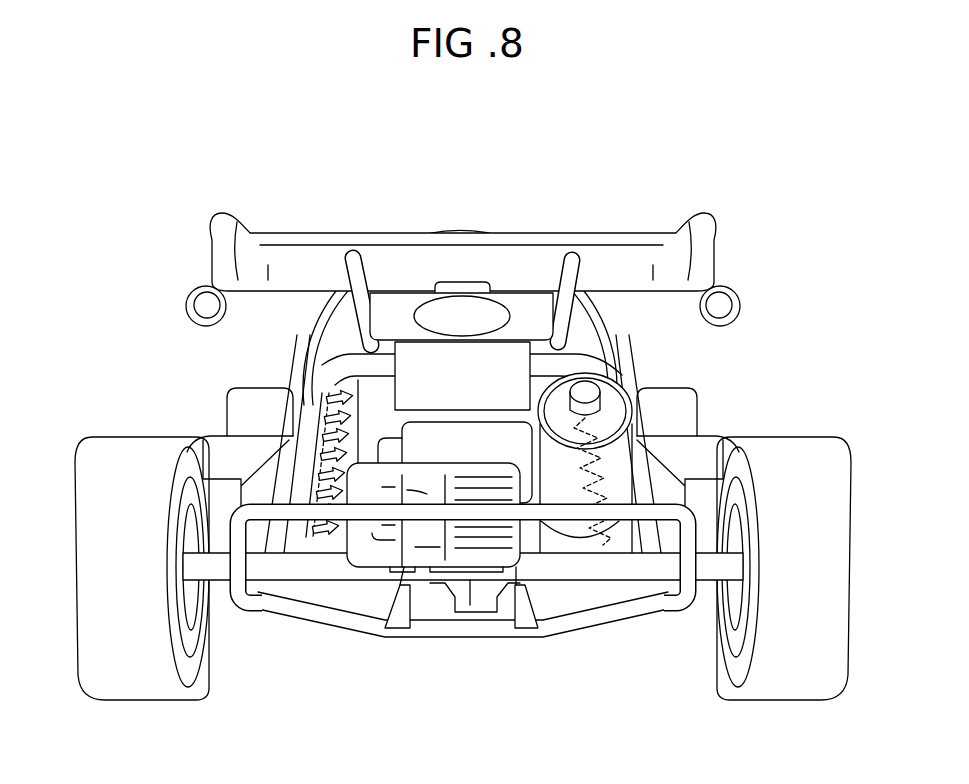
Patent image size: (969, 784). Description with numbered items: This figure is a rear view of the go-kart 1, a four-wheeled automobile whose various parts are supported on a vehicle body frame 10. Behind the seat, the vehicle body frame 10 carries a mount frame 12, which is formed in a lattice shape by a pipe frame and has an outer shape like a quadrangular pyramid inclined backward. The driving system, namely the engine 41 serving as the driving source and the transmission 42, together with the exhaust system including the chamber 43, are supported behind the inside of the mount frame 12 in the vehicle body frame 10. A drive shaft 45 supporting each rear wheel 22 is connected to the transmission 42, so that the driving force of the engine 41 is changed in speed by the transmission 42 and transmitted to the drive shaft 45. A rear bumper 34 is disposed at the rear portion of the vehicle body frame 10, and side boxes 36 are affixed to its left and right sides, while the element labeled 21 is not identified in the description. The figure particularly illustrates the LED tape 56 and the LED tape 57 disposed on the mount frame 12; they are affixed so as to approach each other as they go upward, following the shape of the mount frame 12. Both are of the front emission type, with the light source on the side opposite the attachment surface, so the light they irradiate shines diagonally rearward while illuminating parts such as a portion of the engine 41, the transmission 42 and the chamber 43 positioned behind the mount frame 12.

The go-kart 1 is at (704, 181).
The vehicle body frame 10 is at (640, 548).
The mount frame 12 is at (578, 358).
The side pod 21 is at (245, 408).
The rear wheel 22 is at (93, 513).
The rear bumper 34 is at (541, 522).
The side box 36 is at (220, 448).
The engine 41 is at (428, 441).
The transmission 42 is at (422, 577).
The chamber 43 is at (604, 392).
The drive shaft 45 is at (300, 574).
The LED tape 56 is at (598, 420).
The LED tape 57 is at (331, 410).